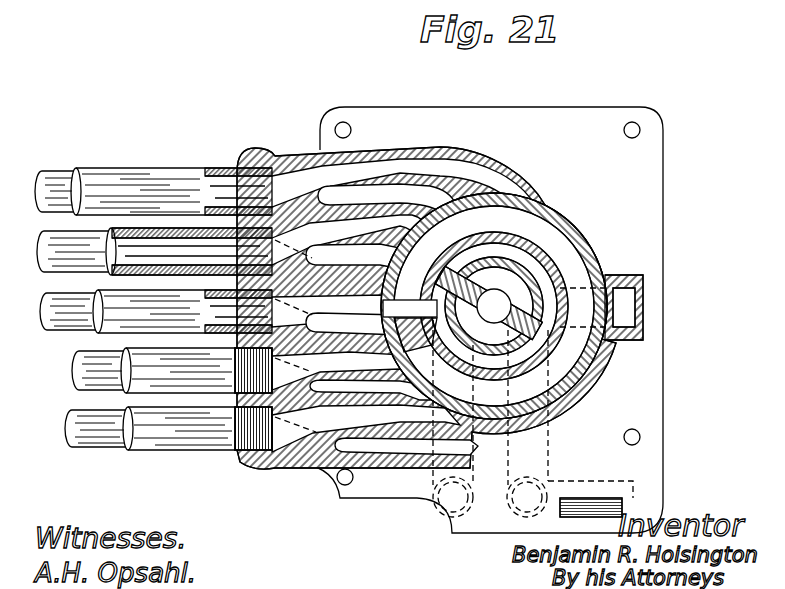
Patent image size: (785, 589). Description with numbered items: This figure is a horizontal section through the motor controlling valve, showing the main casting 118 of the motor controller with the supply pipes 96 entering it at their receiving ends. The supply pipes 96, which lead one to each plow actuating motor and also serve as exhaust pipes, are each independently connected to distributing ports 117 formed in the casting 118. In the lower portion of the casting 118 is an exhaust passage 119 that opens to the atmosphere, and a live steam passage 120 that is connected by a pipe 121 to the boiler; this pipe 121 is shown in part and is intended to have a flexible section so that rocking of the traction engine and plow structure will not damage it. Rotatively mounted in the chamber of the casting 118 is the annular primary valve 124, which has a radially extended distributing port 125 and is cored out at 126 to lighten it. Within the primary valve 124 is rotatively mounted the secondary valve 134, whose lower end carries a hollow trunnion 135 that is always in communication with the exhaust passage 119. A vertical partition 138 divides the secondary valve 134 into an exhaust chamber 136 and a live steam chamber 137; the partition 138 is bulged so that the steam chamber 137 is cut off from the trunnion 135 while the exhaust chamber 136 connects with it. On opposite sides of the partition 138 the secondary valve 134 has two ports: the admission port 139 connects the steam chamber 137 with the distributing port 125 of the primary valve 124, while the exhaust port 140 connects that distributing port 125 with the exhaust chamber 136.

The supply pipes 96 is at (56, 184).
The distributing ports 117 is at (340, 196).
The main casting 118 is at (537, 192).
The exhaust passage 119 is at (436, 514).
The live steam passage 120 is at (622, 310).
The pipe 121 is at (596, 506).
The annular primary valve 124 is at (557, 230).
The distributing port 125 is at (403, 306).
The cored-out portion 126 is at (548, 208).
The secondary valve 134 is at (548, 264).
The hollow trunnion 135 is at (493, 306).
The exhaust chamber 136 is at (519, 186).
The live steam chamber 137 is at (500, 322).
The vertical partition 138 is at (506, 212).
The admission port 139 is at (410, 333).
The exhaust port 140 is at (447, 262).